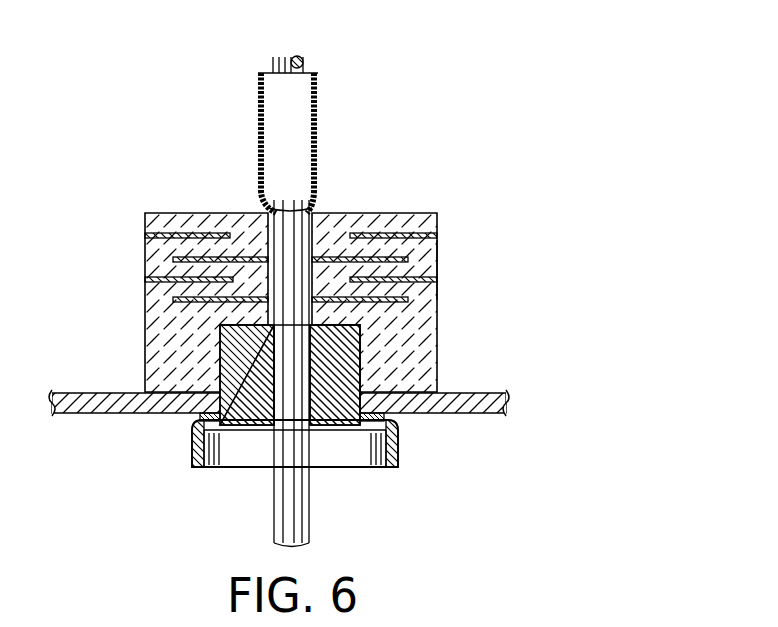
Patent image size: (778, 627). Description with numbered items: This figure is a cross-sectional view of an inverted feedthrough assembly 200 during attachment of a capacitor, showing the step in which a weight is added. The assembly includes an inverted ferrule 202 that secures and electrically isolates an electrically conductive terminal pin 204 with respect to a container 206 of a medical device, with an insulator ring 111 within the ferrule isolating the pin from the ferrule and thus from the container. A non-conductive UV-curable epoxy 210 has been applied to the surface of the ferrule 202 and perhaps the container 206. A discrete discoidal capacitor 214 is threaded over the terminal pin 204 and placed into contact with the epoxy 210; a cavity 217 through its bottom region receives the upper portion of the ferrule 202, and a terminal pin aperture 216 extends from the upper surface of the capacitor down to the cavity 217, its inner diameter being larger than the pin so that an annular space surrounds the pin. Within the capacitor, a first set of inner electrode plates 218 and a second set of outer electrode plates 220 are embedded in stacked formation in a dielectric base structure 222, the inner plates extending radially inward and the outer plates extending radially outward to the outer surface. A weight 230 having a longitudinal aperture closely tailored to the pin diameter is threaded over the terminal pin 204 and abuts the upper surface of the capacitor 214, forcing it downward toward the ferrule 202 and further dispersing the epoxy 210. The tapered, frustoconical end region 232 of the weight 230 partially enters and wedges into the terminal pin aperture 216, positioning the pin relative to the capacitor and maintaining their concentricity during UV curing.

The feedthrough assembly 200 is at (513, 165).
The ferrule 202 is at (196, 473).
The terminal pin 204 is at (303, 60).
The container 206 is at (120, 413).
The epoxy 210 is at (145, 392).
The discrete discoidal capacitor 214 is at (440, 265).
The terminal pin aperture 216 is at (350, 212).
The cavity 217 is at (362, 368).
The inner electrode plates 218 is at (173, 260).
The outer electrode plates 220 is at (145, 238).
The dielectric base structure 222 is at (145, 330).
The weight 230 is at (318, 150).
The end region 232 is at (305, 212).
The insulator ring 111 is at (252, 412).